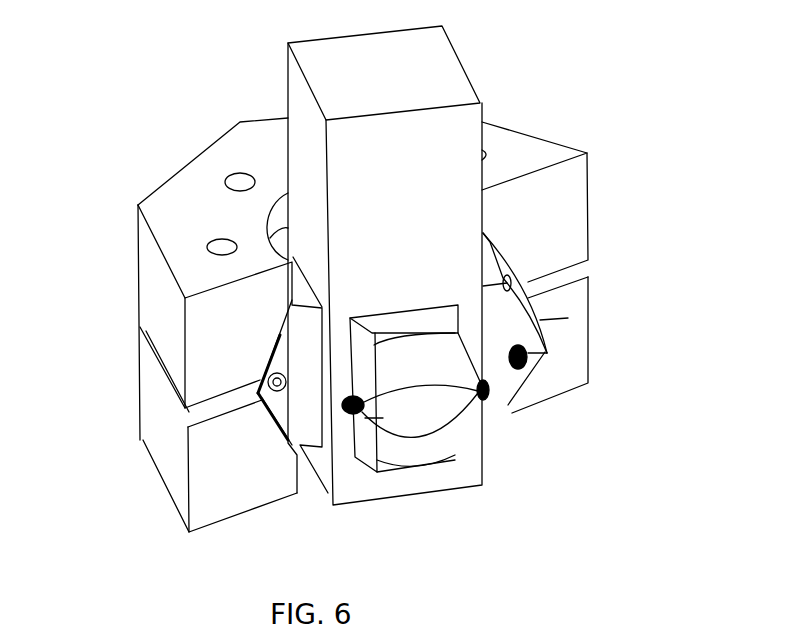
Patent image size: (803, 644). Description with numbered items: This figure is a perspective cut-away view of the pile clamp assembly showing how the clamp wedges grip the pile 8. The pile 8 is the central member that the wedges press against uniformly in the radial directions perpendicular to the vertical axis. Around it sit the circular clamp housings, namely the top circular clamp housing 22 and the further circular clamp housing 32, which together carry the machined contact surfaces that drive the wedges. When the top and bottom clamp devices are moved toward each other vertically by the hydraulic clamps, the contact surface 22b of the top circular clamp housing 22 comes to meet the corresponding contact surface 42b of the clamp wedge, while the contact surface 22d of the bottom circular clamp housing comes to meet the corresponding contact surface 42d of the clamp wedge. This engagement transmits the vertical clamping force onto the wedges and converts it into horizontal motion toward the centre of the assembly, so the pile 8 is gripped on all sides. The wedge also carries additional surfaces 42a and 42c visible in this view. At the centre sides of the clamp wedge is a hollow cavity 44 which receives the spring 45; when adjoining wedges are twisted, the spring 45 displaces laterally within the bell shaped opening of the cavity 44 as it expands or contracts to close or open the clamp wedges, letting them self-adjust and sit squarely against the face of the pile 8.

The pile 8 is at (420, 65).
The top circular clamp housing 22 is at (560, 140).
The contact surface of top circular clamp housing 22b is at (268, 335).
The contact surface of bottom circular clamp housing 22d is at (272, 430).
The circular clamp housing 32 is at (597, 300).
The first leaf spring 42a is at (420, 310).
The contact surface of clamp wedge 42b is at (445, 375).
The third leaf spring 42c is at (438, 403).
The contact surface of clamp wedge 42d is at (435, 453).
The hollow cavity 44 is at (547, 353).
The spring 45 is at (458, 332).